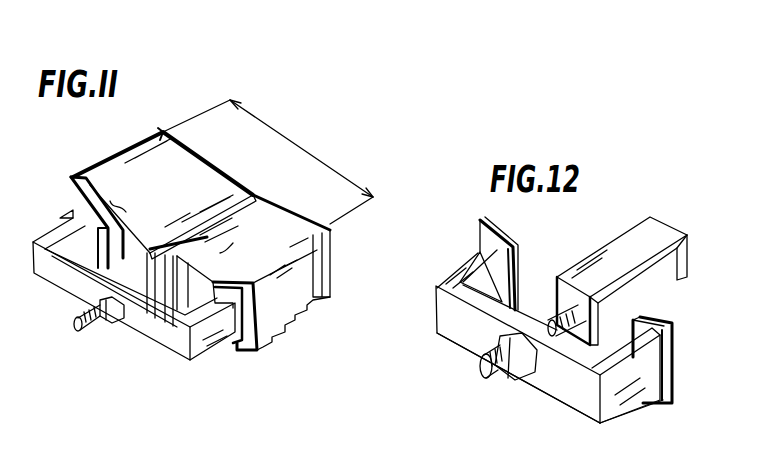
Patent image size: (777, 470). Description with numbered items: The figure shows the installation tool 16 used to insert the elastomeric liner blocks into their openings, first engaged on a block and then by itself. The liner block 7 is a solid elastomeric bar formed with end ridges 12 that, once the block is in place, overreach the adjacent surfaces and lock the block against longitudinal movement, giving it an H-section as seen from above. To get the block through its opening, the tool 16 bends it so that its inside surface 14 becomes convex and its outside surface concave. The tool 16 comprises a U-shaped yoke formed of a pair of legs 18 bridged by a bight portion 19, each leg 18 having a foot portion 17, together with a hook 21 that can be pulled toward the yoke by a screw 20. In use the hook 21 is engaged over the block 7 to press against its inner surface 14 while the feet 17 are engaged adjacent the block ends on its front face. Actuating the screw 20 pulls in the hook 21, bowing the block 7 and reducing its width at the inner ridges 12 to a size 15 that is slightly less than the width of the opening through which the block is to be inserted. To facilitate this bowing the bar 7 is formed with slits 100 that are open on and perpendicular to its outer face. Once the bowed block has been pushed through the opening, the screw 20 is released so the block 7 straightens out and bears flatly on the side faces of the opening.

In FIG. 11, the liner block 7 is at (296, 224).
In FIG. 11, the end ridge 12 is at (158, 136).
In FIG. 11, the inside surface 14 is at (200, 154).
In FIG. 11, the size 15 is at (300, 142).
In FIG. 11, the tool 16 is at (158, 344).
In FIG. 12, the tool 16 is at (458, 327).
In FIG. 11, the foot portion 17 is at (250, 350).
In FIG. 12, the foot portion 17 is at (512, 222).
In FIG. 12, the leg 18 is at (456, 272).
In FIG. 12, the bight portion 19 is at (560, 393).
In FIG. 11, the screw 20 is at (112, 330).
In FIG. 12, the screw 20 is at (552, 318).
In FIG. 11, the hook 21 is at (184, 200).
In FIG. 12, the hook 21 is at (615, 248).
In FIG. 11, the slit 100 is at (180, 213).